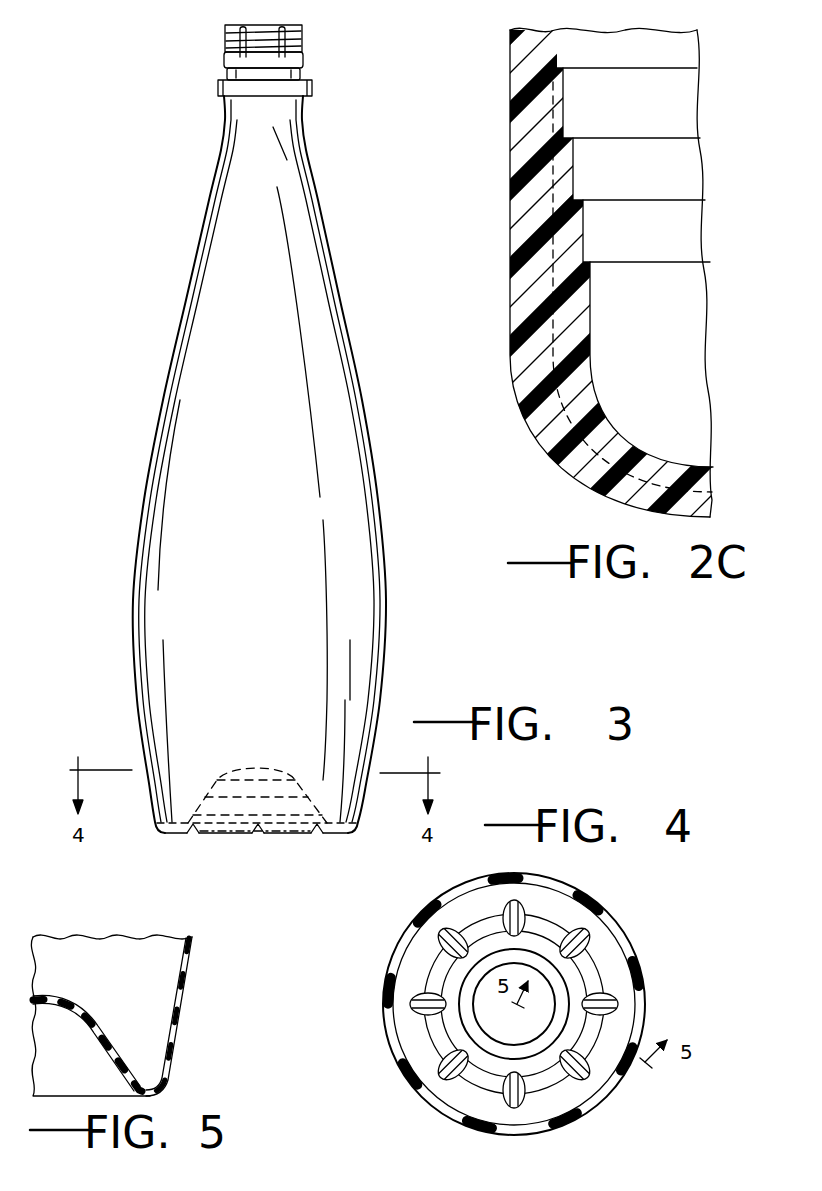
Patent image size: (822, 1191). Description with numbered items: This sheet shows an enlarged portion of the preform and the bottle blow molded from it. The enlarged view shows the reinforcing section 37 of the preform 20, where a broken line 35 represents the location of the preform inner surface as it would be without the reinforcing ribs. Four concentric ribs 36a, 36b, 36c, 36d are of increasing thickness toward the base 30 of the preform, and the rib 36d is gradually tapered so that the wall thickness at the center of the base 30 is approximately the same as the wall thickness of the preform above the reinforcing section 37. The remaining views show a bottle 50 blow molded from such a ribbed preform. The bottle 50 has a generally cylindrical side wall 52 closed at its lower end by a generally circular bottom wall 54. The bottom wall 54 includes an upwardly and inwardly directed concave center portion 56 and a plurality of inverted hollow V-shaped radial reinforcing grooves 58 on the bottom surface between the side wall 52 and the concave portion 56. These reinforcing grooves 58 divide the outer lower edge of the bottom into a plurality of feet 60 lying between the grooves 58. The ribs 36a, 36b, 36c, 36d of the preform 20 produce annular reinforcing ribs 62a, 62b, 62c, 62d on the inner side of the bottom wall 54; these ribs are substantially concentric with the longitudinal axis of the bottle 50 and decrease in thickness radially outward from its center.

In FIG. 2C, the preform 20 is at (510, 55).
In FIG. 2C, the base 30 is at (690, 522).
In FIG. 2C, the broken line 35 is at (510, 180).
In FIG. 2C, the reinforcing rib 36a is at (562, 78).
In FIG. 2C, the reinforcing rib 36b is at (573, 170).
In FIG. 2C, the reinforcing rib 36c is at (583, 224).
In FIG. 2C, the reinforcing rib 36d is at (590, 285).
In FIG. 2C, the reinforcing section 37 is at (498, 256).
In FIG. 3, the bottle 50 is at (200, 235).
In FIG. 3, the side wall 52 is at (343, 292).
In FIG. 4, the side wall 52 is at (596, 898).
In FIG. 5, the side wall 52 is at (195, 963).
In FIG. 3, the bottom wall 54 is at (343, 836).
In FIG. 3, the concave center portion 56 is at (208, 787).
In FIG. 5, the concave center portion 56 is at (101, 1040).
In FIG. 3, the radial reinforcing grooves 58 is at (193, 832).
In FIG. 4, the radial reinforcing grooves 58 is at (590, 948).
In FIG. 3, the feet 60 is at (203, 836).
In FIG. 5, the feet 60 is at (152, 1104).
In FIG. 4, the annular reinforcing rib 62a is at (475, 1073).
In FIG. 5, the annular reinforcing rib 62a is at (143, 1084).
In FIG. 4, the annular reinforcing rib 62b is at (452, 1020).
In FIG. 5, the annular reinforcing rib 62b is at (132, 1058).
In FIG. 4, the annular reinforcing rib 62c is at (528, 1053).
In FIG. 5, the annular reinforcing rib 62c is at (103, 1036).
In FIG. 4, the annular reinforcing rib 62d is at (514, 1004).
In FIG. 5, the annular reinforcing rib 62d is at (81, 1005).